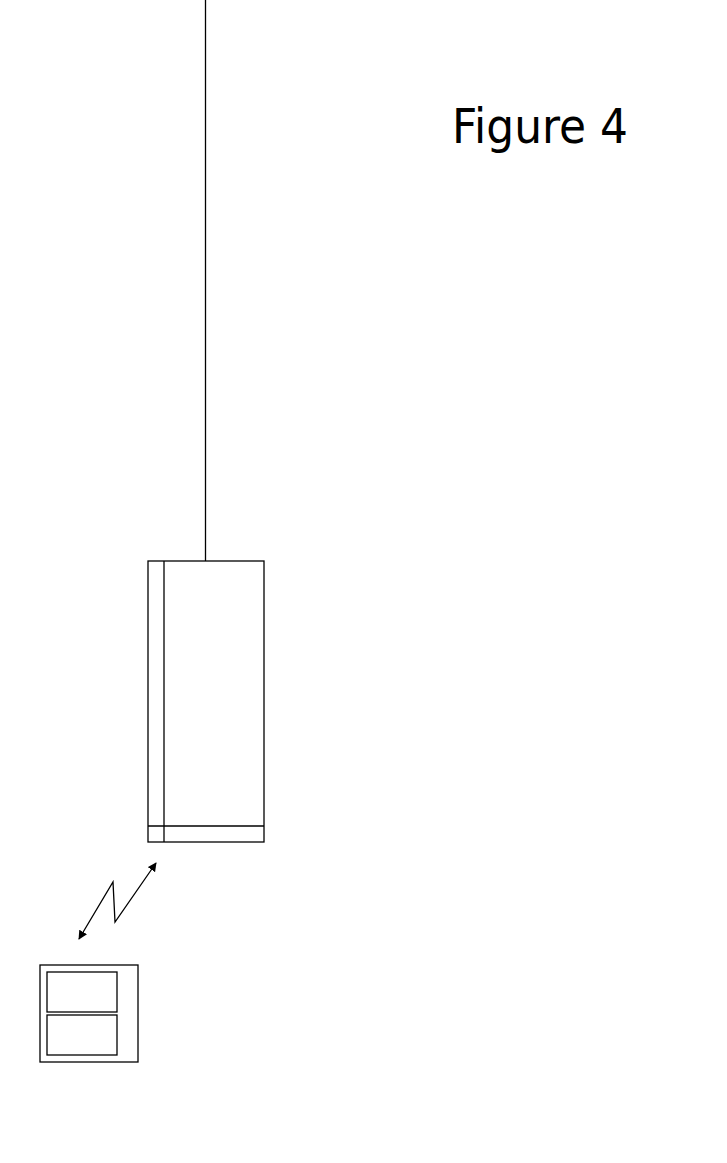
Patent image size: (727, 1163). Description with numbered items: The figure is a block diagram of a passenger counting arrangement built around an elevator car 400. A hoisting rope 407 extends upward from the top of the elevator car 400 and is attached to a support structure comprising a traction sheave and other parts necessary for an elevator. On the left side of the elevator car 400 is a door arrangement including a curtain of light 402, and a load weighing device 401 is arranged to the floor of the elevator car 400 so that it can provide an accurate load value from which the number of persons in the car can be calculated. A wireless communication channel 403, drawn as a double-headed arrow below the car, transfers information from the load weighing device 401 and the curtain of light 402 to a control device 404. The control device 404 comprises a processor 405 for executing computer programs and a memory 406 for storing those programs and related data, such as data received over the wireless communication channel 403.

The elevator car 400 is at (264, 715).
The load weighing device 401 is at (264, 825).
The curtain of light 402 is at (148, 750).
The wireless communication channel 403 is at (137, 893).
The control device 404 is at (138, 1018).
The processor 405 is at (102, 1004).
The memory 406 is at (102, 1046).
The hoisting rope 407 is at (205, 463).